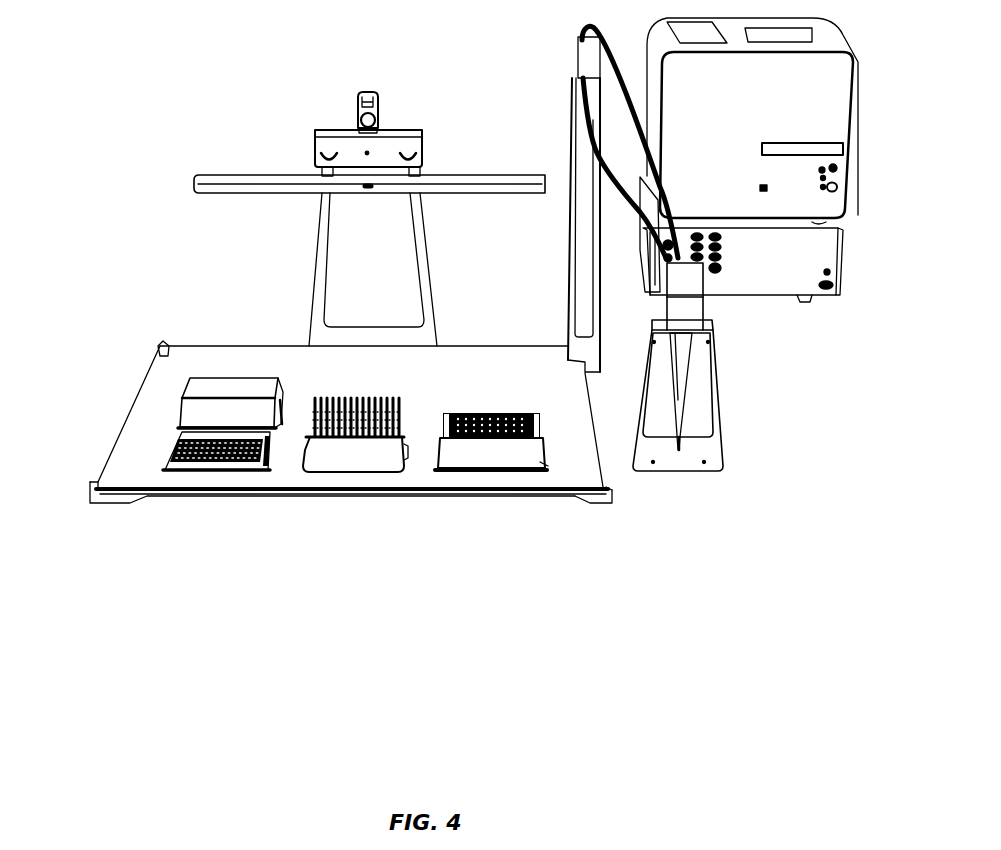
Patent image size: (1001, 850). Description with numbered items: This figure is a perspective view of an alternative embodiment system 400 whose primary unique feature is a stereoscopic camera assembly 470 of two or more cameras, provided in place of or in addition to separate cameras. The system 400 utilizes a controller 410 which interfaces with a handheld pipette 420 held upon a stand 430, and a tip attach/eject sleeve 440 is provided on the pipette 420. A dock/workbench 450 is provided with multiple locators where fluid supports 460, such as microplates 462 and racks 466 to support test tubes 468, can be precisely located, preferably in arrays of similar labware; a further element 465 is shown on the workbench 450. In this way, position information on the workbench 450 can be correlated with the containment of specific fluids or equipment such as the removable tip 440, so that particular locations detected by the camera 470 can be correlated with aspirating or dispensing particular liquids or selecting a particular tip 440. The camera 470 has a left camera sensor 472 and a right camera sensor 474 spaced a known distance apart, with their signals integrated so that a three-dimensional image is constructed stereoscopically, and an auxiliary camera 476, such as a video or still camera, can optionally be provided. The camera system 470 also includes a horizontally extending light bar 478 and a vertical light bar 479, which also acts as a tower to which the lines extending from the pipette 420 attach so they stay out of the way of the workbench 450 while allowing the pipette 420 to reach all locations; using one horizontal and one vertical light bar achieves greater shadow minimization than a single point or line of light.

The system 400 is at (120, 82).
The controller 410 is at (785, 273).
The handheld pipette 420 is at (690, 305).
The stand 430 is at (700, 366).
The tip attach/eject sleeve 440 is at (690, 405).
The dock/workbench 450 is at (455, 360).
The fluid supports 460 is at (160, 348).
The microplates 462 is at (215, 460).
The plate holder 465 is at (547, 464).
The racks 466 is at (556, 392).
The test tubes 468 is at (336, 410).
The stereoscopic camera assembly 470 is at (400, 142).
The left camera sensor 472 is at (320, 158).
The right camera sensor 474 is at (420, 157).
The auxiliary camera 476 is at (440, 60).
The light bar 478 is at (272, 167).
The vertical light bar 479 is at (563, 62).